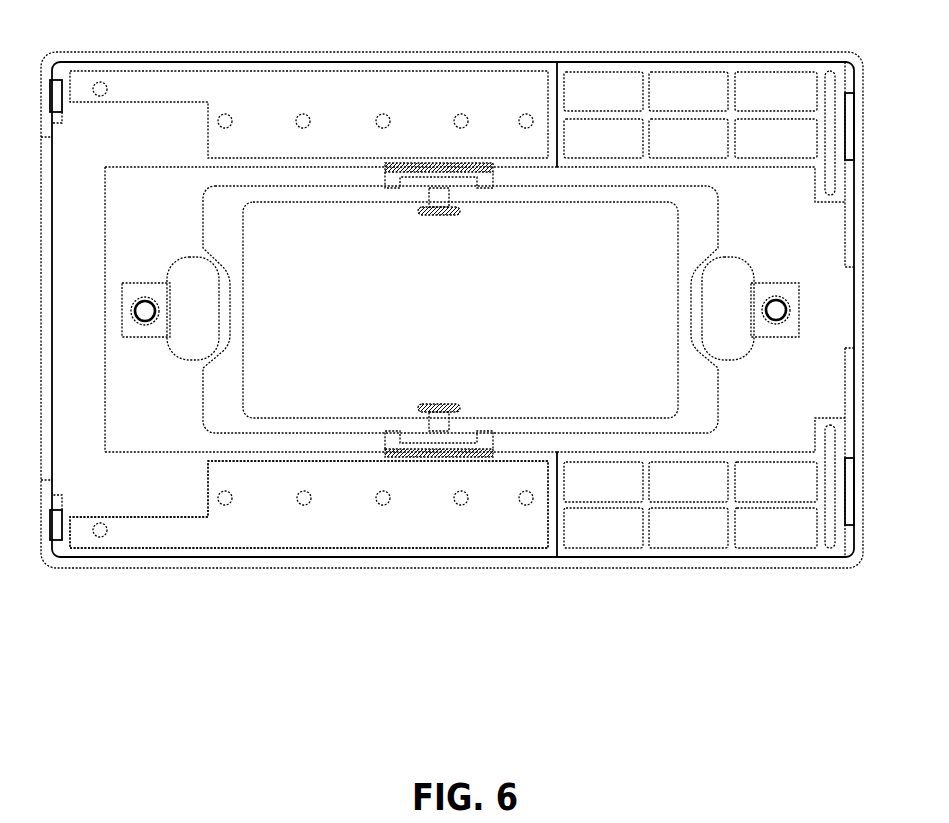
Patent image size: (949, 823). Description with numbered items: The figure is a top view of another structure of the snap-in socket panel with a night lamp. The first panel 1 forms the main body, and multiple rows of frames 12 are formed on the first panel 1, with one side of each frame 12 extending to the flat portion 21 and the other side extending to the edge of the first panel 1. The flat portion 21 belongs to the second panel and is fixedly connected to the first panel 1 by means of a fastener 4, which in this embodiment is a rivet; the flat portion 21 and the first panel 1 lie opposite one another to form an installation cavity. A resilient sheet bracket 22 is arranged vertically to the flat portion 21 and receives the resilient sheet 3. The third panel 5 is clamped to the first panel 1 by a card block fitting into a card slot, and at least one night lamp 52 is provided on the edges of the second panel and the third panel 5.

The first panel 1 is at (778, 388).
The frame 12 is at (785, 478).
The flat portion 21 is at (322, 527).
The resilient sheet bracket 22 is at (488, 445).
The resilient sheet 3 is at (438, 435).
The fastener 4 is at (223, 507).
The third panel 5 is at (858, 480).
The night lamp 52 is at (50, 400).